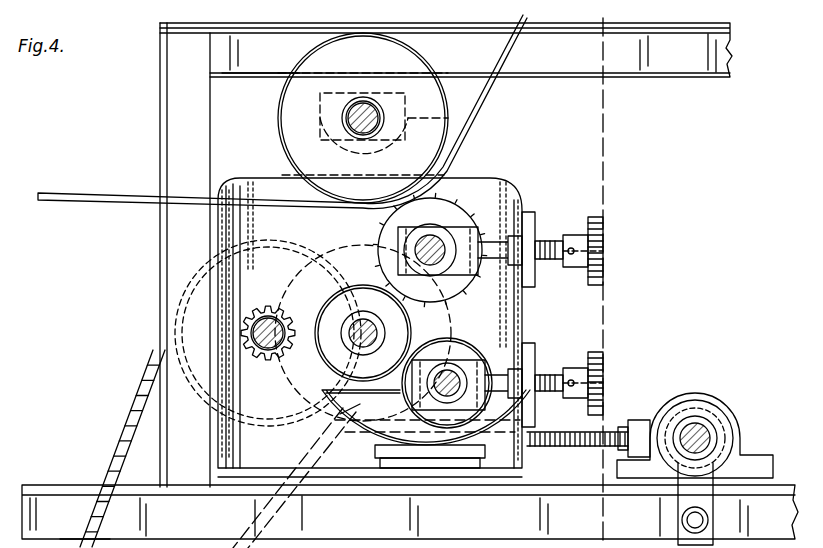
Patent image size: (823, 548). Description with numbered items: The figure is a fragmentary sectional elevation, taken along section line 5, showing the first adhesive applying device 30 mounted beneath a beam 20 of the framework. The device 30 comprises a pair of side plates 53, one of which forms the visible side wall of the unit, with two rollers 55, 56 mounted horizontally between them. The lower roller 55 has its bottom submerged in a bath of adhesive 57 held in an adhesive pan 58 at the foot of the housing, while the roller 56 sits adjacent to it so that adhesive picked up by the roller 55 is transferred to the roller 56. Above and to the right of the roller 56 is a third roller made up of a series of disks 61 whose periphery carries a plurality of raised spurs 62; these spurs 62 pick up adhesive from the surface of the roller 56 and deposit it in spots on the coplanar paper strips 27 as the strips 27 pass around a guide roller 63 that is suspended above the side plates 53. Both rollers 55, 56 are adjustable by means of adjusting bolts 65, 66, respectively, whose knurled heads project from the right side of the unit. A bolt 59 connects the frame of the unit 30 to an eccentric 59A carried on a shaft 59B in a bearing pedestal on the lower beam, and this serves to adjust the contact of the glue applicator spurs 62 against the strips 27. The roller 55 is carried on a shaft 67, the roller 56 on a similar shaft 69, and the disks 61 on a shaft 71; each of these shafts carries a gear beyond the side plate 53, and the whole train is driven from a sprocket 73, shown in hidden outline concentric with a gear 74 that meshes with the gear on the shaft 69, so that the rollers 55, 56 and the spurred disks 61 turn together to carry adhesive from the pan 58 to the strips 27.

The section line 5- 5 is at (612, 524).
The frame beam 20 is at (667, 83).
The strips 27 is at (462, 135).
The first adhesive applying device 30 is at (531, 178).
The side plates 53 is at (270, 185).
The roller 55 is at (458, 346).
The roller 56 is at (330, 296).
The bath of adhesive 57 is at (345, 412).
The adhesive pan 58 is at (402, 429).
The bolt 59 is at (606, 432).
The eccentric 59A is at (654, 420).
The shaft 59B is at (708, 430).
The disks 61 is at (466, 216).
The raised spurs 62 is at (440, 300).
The guide roller 63 is at (279, 122).
The adjusting bolt 65 is at (556, 376).
The adjusting bolt 66 is at (556, 242).
The shaft 67 is at (470, 366).
The shaft 69 is at (352, 340).
The shaft 71 is at (418, 246).
The sprocket 73 is at (268, 351).
The gear 74 is at (262, 308).